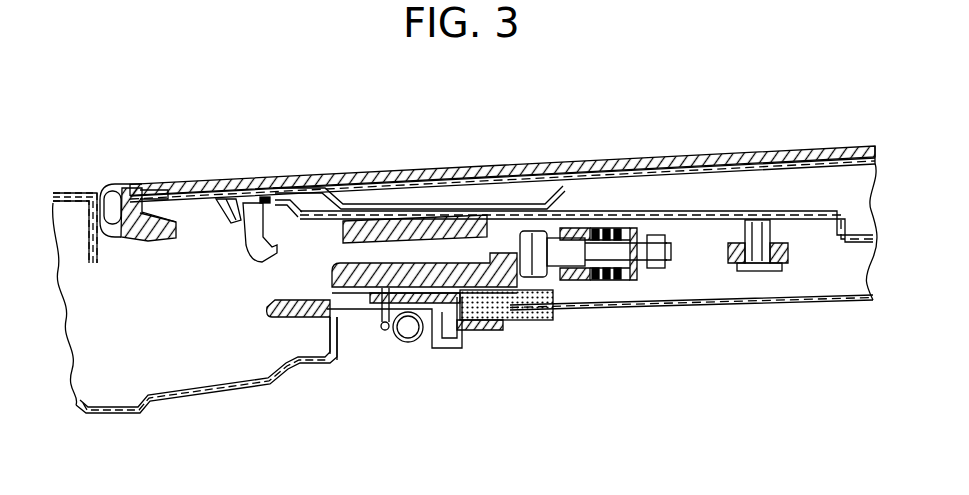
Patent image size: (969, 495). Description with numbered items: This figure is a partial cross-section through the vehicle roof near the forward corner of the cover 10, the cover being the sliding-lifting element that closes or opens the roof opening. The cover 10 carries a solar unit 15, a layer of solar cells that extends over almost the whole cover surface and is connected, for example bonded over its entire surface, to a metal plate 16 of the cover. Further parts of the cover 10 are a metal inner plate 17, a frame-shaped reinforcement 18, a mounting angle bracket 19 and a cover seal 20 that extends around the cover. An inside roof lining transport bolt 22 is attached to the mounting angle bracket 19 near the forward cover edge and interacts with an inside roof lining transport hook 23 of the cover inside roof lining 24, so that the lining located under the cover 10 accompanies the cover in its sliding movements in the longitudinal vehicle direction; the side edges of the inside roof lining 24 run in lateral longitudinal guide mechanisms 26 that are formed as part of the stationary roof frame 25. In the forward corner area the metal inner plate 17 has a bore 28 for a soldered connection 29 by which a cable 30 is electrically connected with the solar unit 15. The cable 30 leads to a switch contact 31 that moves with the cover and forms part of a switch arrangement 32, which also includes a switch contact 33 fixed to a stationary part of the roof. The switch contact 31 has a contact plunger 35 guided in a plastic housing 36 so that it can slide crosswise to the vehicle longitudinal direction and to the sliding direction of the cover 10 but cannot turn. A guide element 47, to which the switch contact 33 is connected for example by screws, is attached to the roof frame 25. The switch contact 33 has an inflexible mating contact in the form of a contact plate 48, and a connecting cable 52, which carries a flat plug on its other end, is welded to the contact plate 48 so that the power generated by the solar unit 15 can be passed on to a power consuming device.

The cover 10 is at (801, 130).
The solar unit 15 is at (188, 185).
The metal plate 16 is at (375, 176).
The metal inner plate 17 is at (508, 190).
The frame-shaped reinforcement 18 is at (452, 190).
The mounting angle bracket 19 is at (690, 210).
The cover seal 20 is at (124, 183).
The inside roof lining transport bolt 22 is at (760, 228).
The inside roof lining transport hook 23 is at (788, 265).
The cover inside roof lining 24 is at (714, 308).
The roof frame 25 is at (260, 387).
The lateral longitudinal guide mechanism 26 is at (472, 325).
The bore 28 is at (278, 196).
The soldered connection 29 is at (258, 198).
The cable 30 is at (227, 198).
The switch contact 31 is at (619, 275).
The switch arrangement 32 is at (553, 340).
The switch contact 33 is at (428, 345).
The contact plunger 35 is at (558, 258).
The plastic housing 36 is at (605, 215).
The guide element 47 is at (310, 318).
The contact plate 48 is at (513, 318).
The connecting cable 52 is at (386, 331).